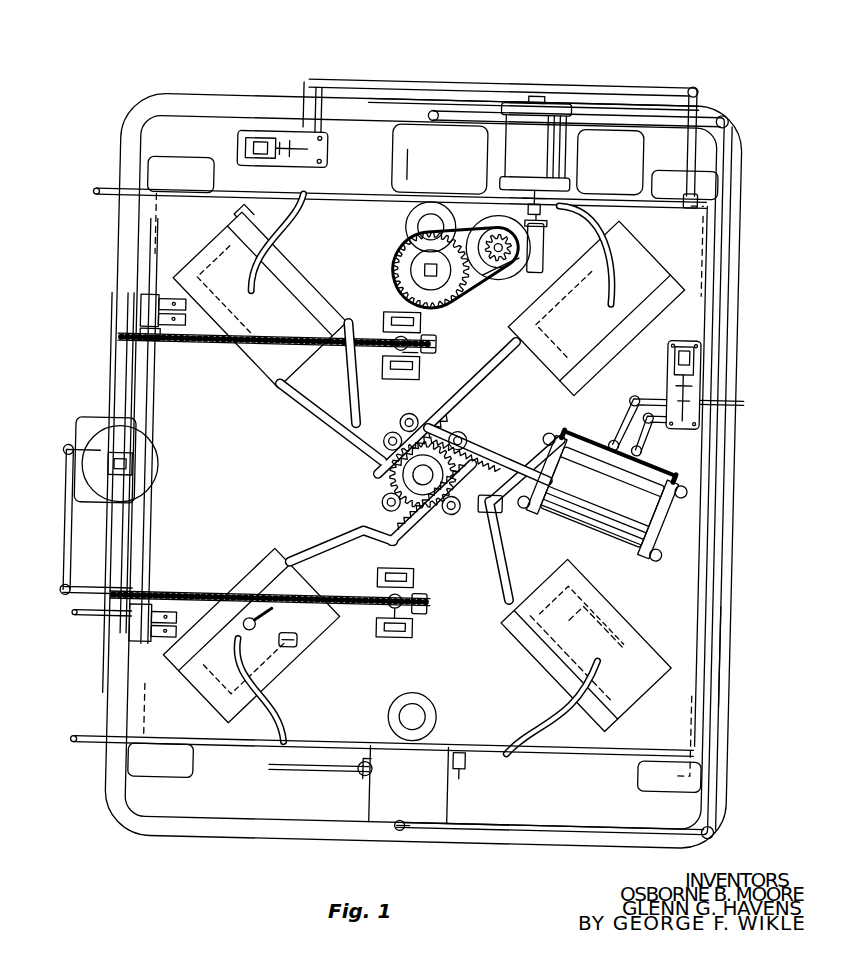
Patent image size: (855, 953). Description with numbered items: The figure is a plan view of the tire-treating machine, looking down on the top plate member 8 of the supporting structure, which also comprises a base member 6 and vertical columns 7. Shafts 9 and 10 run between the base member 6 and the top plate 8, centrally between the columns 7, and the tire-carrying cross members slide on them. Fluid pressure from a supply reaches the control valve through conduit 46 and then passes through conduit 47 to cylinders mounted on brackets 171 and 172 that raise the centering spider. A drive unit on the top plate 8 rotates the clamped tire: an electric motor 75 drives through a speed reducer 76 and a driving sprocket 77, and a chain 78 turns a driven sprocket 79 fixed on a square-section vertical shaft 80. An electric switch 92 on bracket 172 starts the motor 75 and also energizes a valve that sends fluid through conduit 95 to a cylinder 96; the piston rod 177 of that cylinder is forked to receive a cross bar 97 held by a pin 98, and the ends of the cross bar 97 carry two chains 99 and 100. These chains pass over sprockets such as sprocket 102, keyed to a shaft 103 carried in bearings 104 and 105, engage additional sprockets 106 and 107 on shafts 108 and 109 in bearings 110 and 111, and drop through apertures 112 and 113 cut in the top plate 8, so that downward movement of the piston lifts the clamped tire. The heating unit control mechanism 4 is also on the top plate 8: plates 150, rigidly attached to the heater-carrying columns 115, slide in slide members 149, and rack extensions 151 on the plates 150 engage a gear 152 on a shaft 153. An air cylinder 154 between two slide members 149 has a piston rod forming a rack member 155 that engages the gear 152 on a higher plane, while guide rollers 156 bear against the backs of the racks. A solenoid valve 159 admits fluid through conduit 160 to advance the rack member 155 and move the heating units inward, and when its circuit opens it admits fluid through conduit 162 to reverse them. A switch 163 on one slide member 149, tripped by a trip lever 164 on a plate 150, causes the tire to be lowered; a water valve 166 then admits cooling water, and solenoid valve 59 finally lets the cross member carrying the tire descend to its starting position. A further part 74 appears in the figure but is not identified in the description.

The heating unit control mechanism 4 is at (253, 725).
The base member 6 is at (207, 805).
The vertical columns 7 is at (140, 239).
The top plate member 8 is at (175, 735).
The shaft 9 is at (447, 716).
The shaft 10 is at (405, 222).
The conduit 46 is at (727, 684).
The conduit 47 is at (721, 142).
The solenoid valve 59 is at (293, 143).
The air line 74 is at (392, 83).
The electric motor 75 is at (513, 126).
The speed reducer 76 is at (540, 230).
The driving sprocket 77 is at (505, 268).
The chain 78 is at (486, 277).
The driven sprocket 79 is at (454, 295).
The vertical shaft 80 is at (420, 268).
The electric switch 92 is at (478, 774).
The conduit 95 is at (93, 631).
The cylinder 96 is at (104, 452).
The cross bar 97 is at (122, 391).
The pin 98 is at (140, 472).
The chain 99 is at (190, 592).
The chain 100 is at (197, 355).
The sprocket 102 is at (132, 346).
The shaft 103 is at (153, 401).
The bearing 104 is at (133, 636).
The bearing 105 is at (136, 308).
The sprocket 106 is at (391, 626).
The sprocket 107 is at (396, 371).
The shaft 108 is at (404, 643).
The shaft 109 is at (392, 315).
The bearing 110 is at (420, 578).
The bearing 111 is at (410, 380).
The aperture 112 is at (435, 608).
The aperture 113 is at (432, 344).
The column 115 is at (544, 678).
The slide members 149 is at (523, 631).
The plates 150 is at (562, 582).
The rack extensions 151 is at (411, 525).
The gear 152 is at (392, 481).
The shaft 153 is at (420, 478).
The air cylinder 154 is at (651, 502).
The rack member 155 is at (497, 459).
The guide rollers 156 is at (459, 436).
The solenoid valve 159 is at (698, 379).
The conduit 160 is at (649, 433).
The conduit 162 is at (627, 406).
The switch 163 is at (296, 655).
The trip lever 164 is at (272, 645).
The water valve 166 is at (356, 764).
The bracket 171 is at (408, 135).
The bracket 172 is at (437, 805).
The piston rod 177 is at (110, 475).